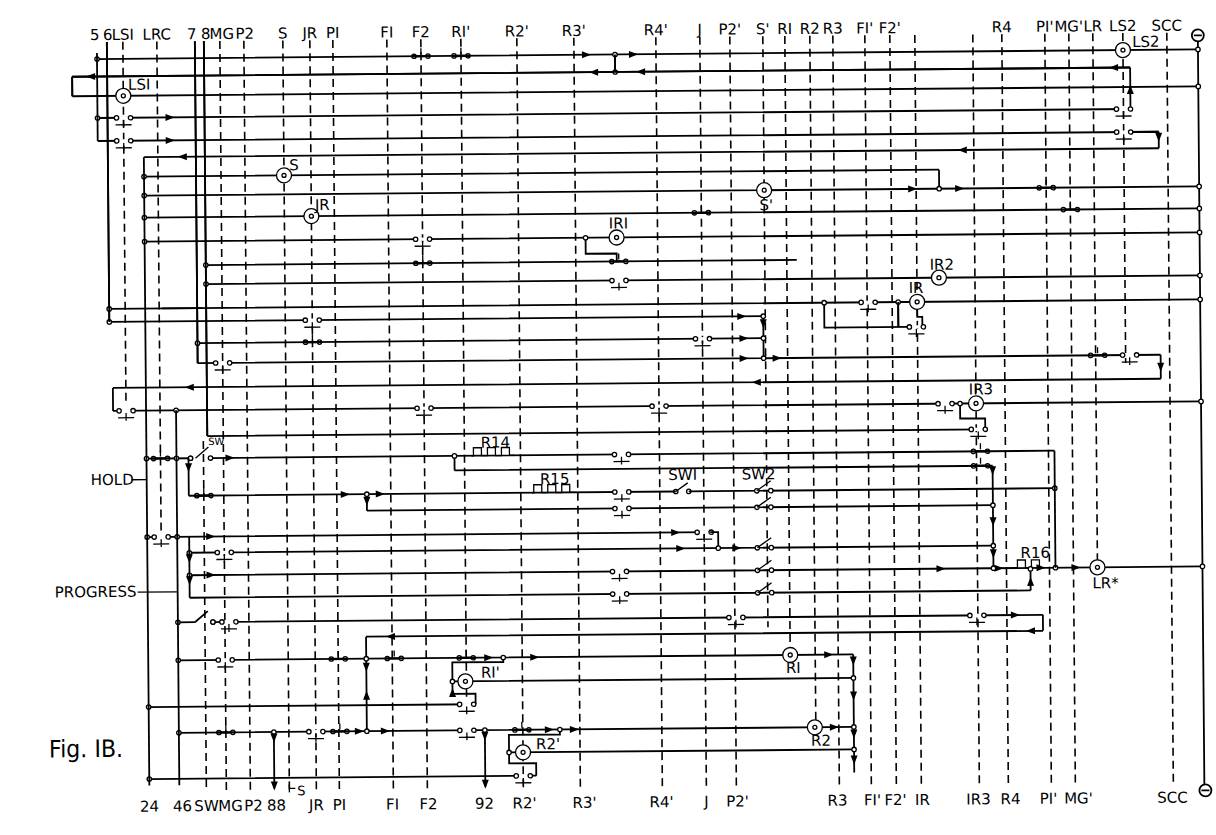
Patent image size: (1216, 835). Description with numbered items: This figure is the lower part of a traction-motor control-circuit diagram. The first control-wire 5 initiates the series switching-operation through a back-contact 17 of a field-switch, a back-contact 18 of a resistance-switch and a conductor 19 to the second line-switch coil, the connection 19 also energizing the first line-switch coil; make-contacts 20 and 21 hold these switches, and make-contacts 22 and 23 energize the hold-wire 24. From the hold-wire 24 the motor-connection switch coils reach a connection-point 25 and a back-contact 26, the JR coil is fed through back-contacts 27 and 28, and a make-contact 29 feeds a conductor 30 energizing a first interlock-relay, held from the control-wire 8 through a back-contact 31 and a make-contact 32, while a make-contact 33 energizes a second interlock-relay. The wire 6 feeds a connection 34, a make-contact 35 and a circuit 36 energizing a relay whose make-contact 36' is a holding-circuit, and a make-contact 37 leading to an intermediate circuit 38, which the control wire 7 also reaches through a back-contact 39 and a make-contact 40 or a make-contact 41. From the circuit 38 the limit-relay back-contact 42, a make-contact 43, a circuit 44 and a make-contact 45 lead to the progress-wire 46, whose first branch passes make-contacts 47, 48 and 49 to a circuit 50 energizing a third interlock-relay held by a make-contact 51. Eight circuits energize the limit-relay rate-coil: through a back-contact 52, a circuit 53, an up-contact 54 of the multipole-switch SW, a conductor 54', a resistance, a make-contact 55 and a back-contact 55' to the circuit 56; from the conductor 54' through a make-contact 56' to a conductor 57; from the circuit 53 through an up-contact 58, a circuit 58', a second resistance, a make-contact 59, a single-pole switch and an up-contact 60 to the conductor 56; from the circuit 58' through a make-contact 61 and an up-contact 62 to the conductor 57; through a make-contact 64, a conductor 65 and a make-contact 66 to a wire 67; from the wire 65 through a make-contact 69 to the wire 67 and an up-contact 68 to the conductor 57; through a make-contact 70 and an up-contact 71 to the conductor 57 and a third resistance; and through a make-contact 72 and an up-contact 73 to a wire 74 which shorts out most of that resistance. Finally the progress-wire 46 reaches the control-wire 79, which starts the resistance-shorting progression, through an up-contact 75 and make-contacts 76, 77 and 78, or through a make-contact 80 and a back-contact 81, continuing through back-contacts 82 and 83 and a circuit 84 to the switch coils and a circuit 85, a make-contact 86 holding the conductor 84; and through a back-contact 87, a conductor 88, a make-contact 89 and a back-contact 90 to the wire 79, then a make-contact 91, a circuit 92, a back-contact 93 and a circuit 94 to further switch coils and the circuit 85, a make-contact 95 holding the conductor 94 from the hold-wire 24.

The first control-wire 5 is at (90, 95).
The control-wire 6 is at (462, 183).
The control wire 7 is at (189, 206).
The control-wire 8 is at (207, 242).
The back-contact on field-switch F2 17 is at (412, 61).
The back-contact on resistance-switch R1' 18 is at (468, 61).
The conductor 19 is at (601, 69).
The LS1 make-contact 20 is at (131, 113).
The LS2 make-contact 21 is at (1134, 109).
The LS1 make-contact 22 is at (131, 136).
The LS2 make-contact 23 is at (1113, 141).
The hold-wire 24 is at (645, 468).
The connection-point 25 is at (945, 183).
The P1' back-contact 26 is at (1053, 178).
The back-contact of the J switch 27 is at (708, 204).
The back-contact of the MG' switch 28 is at (1076, 200).
The F2 make-contact 29 is at (429, 234).
The conductor 30 is at (597, 239).
The F2 back-contact 31 is at (430, 269).
The IR1 make-contact 32 is at (628, 261).
The IR1 make-contact 33 is at (629, 288).
The first circuit-connection 34 is at (195, 307).
The F1' make-contact 35 is at (861, 297).
The circuit 36 is at (891, 305).
The make-contact of relay IR 36' is at (928, 335).
The JR make-contact 37 is at (301, 328).
The intermediate circuit 38 is at (768, 344).
The JR back-contact 39 is at (305, 348).
The J make-contact 40 is at (709, 336).
The MG make-contact 41 is at (228, 359).
The back-contact of the limit-relay LR 42 is at (1096, 346).
The LS2 make-contact 43 is at (1134, 360).
The circuit 44 is at (629, 387).
The LS1 make-contact 45 is at (132, 414).
The progress-wire 46 is at (173, 587).
The F2 make-contact 47 is at (432, 405).
The R4' make-contact 48 is at (667, 403).
The IR2 make-contact 49 is at (935, 409).
The circuit 50 is at (964, 404).
The IR3 make-contact 51 is at (987, 432).
The LRC back-contact 52 is at (162, 447).
The circuit 53 is at (189, 475).
The normally open up-contact of switch SW 54 is at (203, 477).
The conductor 54' is at (450, 455).
The IR1 make-contact 55 is at (628, 449).
The IR3 back-contact 55' is at (964, 444).
The circuit 56 is at (1068, 510).
The IR3 make-contact 56' is at (966, 474).
The conductor 57 is at (1002, 523).
The normally closed up-contact of switch SW 58 is at (210, 506).
The circuit 58' is at (370, 492).
The IR1 make-contact 59 is at (628, 487).
The normally open up-contact of switch SW2 60 is at (774, 493).
The IR1 make-contact 61 is at (632, 516).
The normally closed up-contact of switch SW2 62 is at (756, 512).
The LRC make-contact 64 is at (164, 538).
The conductor 65 is at (191, 564).
The J-switch make-contact 66 is at (701, 531).
The wire 67 is at (722, 557).
The normally closed up-contact of switch SW2 68 is at (773, 537).
The MG make-contact 69 is at (237, 558).
The IR1 make-contact 70 is at (629, 566).
The normally open up-contact of switch SW2 71 is at (762, 569).
The IR1 make-contact 72 is at (630, 599).
The normally closed up-contact of switch SW2 73 is at (770, 594).
The wire 74 is at (1033, 588).
The normally open up-contact of switch SW 75 is at (211, 610).
The MG make-contact 76 is at (237, 617).
The P2' make-contact 77 is at (729, 613).
The IR3 make-contact 78 is at (987, 612).
The control-wire 79 is at (699, 684).
The MG make-contact 80 is at (235, 654).
The P1 back-contact 81 is at (335, 649).
The F1 back-contact 82 is at (402, 649).
The R1' back-contact 83 is at (459, 649).
The circuit 84 is at (476, 671).
The circuit 85 is at (866, 718).
The R1' make-contact 86 is at (458, 712).
The MG back-contact 87 is at (235, 722).
The conductor 88 is at (279, 751).
The JR make-contact 89 is at (313, 725).
The P1 back-contact 90 is at (348, 721).
The R1' make-contact 91 is at (463, 744).
The circuit 92 is at (481, 731).
The R2' back-contact 93 is at (518, 719).
The circuit 94 is at (531, 741).
The R2' make-contact 95 is at (536, 776).